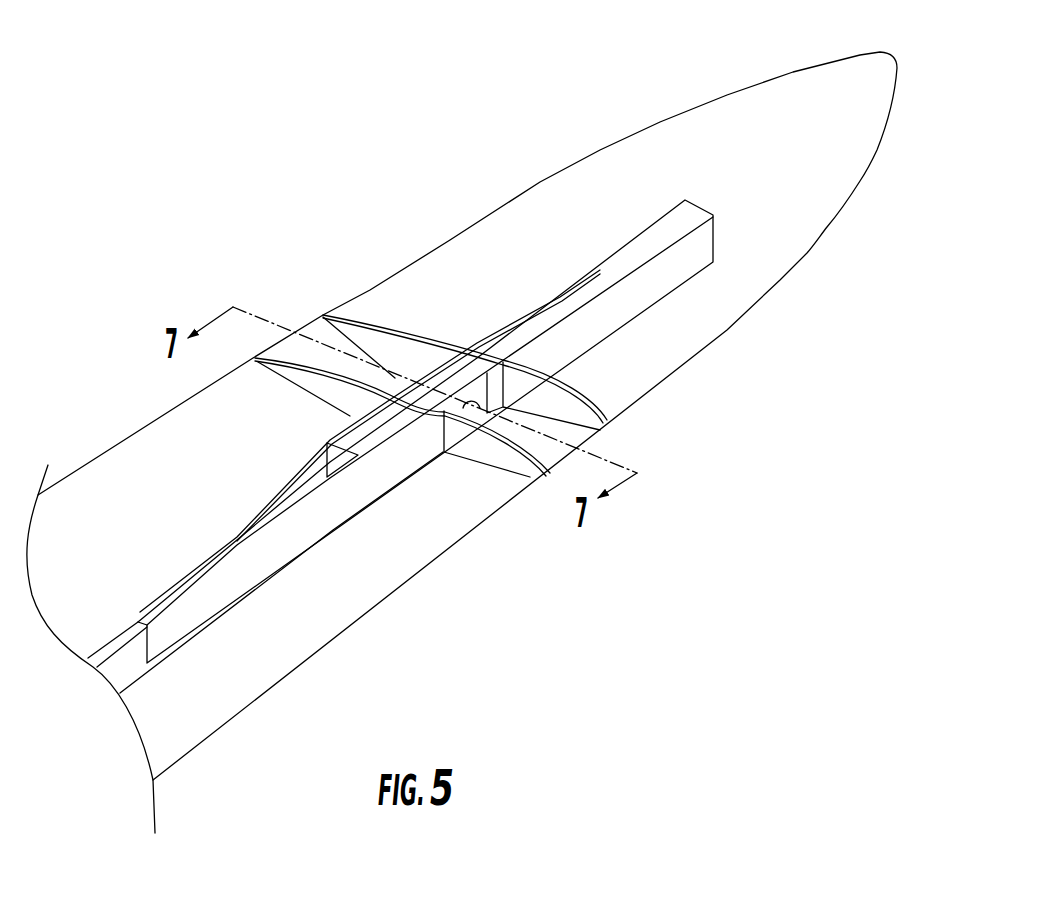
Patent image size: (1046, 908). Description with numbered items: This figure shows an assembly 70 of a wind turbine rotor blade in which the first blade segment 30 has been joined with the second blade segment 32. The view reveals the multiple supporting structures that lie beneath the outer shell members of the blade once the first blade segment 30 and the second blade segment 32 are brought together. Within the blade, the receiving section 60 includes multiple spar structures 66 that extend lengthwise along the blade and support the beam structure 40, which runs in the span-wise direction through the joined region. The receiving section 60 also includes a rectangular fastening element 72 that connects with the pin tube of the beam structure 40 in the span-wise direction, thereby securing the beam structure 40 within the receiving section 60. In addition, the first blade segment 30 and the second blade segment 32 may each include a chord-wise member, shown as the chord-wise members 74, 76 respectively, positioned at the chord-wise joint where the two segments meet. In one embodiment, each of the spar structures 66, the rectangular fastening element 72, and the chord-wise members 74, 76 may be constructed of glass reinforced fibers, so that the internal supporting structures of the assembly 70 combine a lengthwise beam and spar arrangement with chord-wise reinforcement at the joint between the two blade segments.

The first blade segment 30 is at (648, 128).
The second blade segment 32 is at (92, 478).
The beam structure 40 is at (627, 263).
The receiving section 60 is at (430, 557).
The spar structures 66 is at (262, 500).
The assembly 70 is at (172, 205).
The rectangular fastening element 72 is at (330, 461).
The chord-wise member 74 is at (597, 398).
The chord-wise member 76 is at (512, 477).